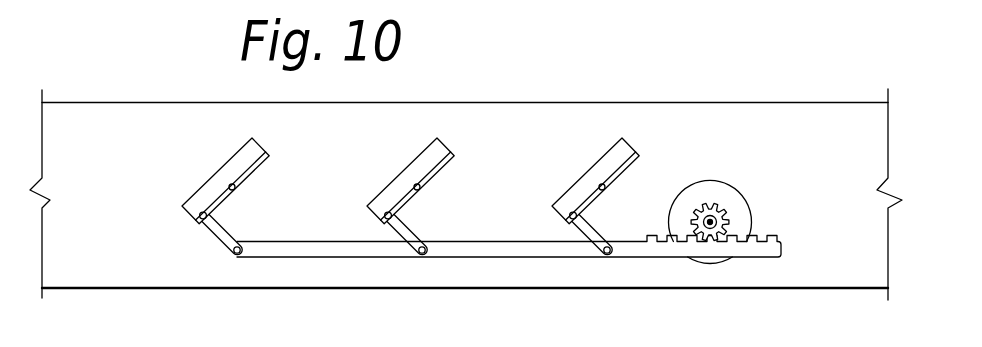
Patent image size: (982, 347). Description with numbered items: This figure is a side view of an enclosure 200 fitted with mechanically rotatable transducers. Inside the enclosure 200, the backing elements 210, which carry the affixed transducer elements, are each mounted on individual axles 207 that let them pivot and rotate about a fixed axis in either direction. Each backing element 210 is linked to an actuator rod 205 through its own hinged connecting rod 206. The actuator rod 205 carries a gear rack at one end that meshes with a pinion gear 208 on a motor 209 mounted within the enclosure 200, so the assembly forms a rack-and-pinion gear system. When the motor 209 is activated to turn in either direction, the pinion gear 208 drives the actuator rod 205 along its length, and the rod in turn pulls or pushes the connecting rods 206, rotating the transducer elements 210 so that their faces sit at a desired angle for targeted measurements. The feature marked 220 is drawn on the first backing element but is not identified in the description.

The enclosure 200 is at (752, 47).
The actuator rod 205 is at (473, 242).
The hinged connecting rod 206 is at (228, 228).
The axle 207 is at (415, 185).
The pinion gear 208 is at (707, 210).
The motor 209 is at (743, 197).
The backing element 210 is at (230, 171).
The pivot pin 220 is at (270, 155).